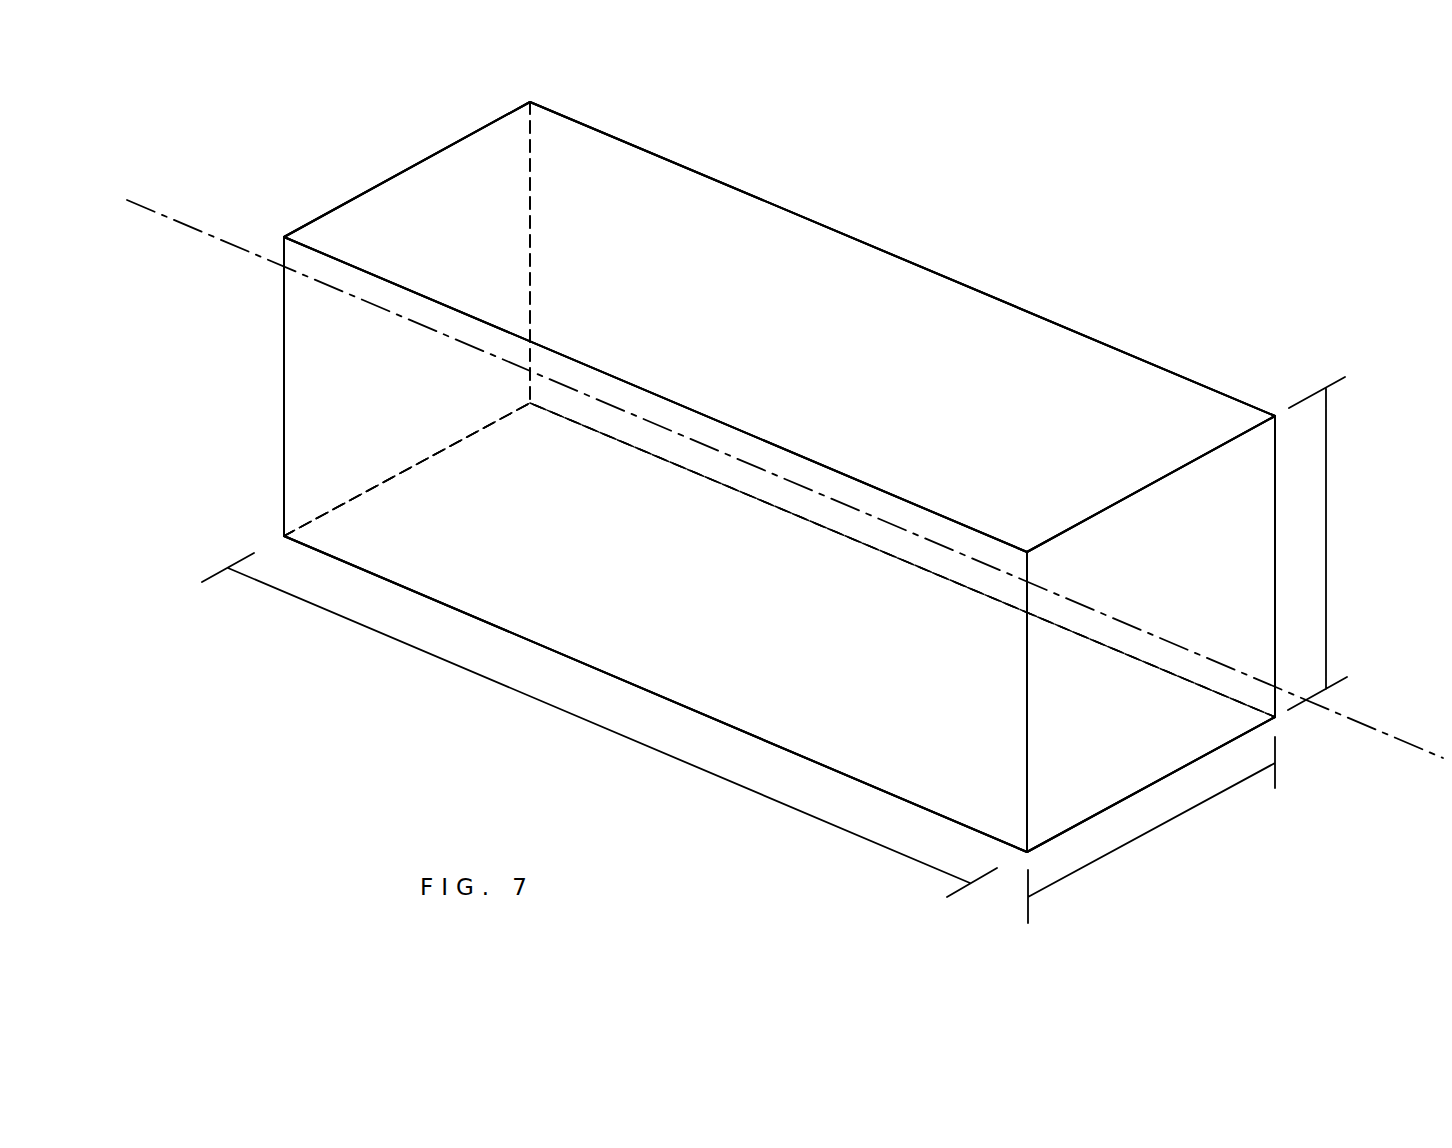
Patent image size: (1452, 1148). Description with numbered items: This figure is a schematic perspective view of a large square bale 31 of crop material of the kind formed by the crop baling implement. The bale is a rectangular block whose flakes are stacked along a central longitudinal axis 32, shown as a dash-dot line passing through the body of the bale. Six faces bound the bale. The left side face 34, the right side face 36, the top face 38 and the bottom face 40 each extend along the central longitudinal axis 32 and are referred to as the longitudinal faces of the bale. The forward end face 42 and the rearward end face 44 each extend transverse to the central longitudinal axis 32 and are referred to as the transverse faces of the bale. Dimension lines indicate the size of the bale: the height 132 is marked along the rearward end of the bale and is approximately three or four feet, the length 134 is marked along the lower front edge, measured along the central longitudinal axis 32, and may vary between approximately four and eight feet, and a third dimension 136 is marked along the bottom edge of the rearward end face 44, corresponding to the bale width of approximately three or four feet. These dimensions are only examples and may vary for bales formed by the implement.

The vessel / body 31 is at (928, 130).
The central longitudinal axis 32 is at (177, 221).
The left side face 34 is at (492, 508).
The right side face 36 is at (1008, 430).
The top face 38 is at (473, 232).
The bottom face 40 is at (791, 650).
The forward end face 42 is at (377, 372).
The rearward end face 44 is at (1225, 587).
The height 132 is at (1326, 541).
The length 134 is at (555, 708).
The width dimension 136 is at (1137, 838).